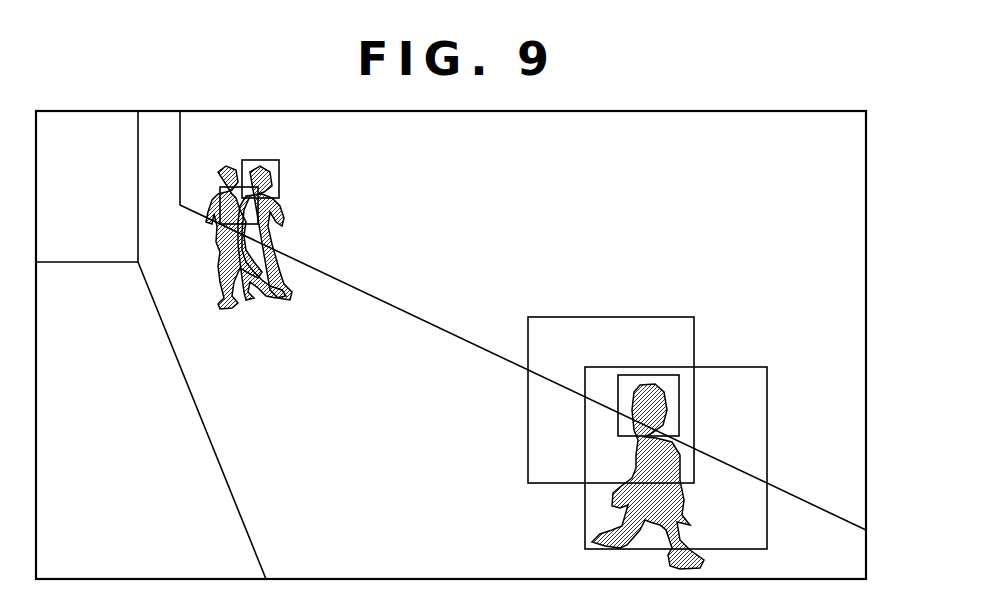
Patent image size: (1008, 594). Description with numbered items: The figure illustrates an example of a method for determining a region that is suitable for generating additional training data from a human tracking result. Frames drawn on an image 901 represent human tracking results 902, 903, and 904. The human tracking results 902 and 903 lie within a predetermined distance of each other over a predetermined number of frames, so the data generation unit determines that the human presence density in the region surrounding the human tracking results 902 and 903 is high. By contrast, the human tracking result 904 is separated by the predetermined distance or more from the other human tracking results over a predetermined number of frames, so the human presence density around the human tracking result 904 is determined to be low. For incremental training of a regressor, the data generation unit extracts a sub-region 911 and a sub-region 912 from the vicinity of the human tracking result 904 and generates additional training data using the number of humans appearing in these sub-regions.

The image 901 is at (788, 111).
The human tracking result 902 is at (279, 164).
The human tracking result 903 is at (268, 199).
The human tracking result 904 is at (657, 375).
The sub-region 911 is at (758, 367).
The sub-region 912 is at (640, 317).